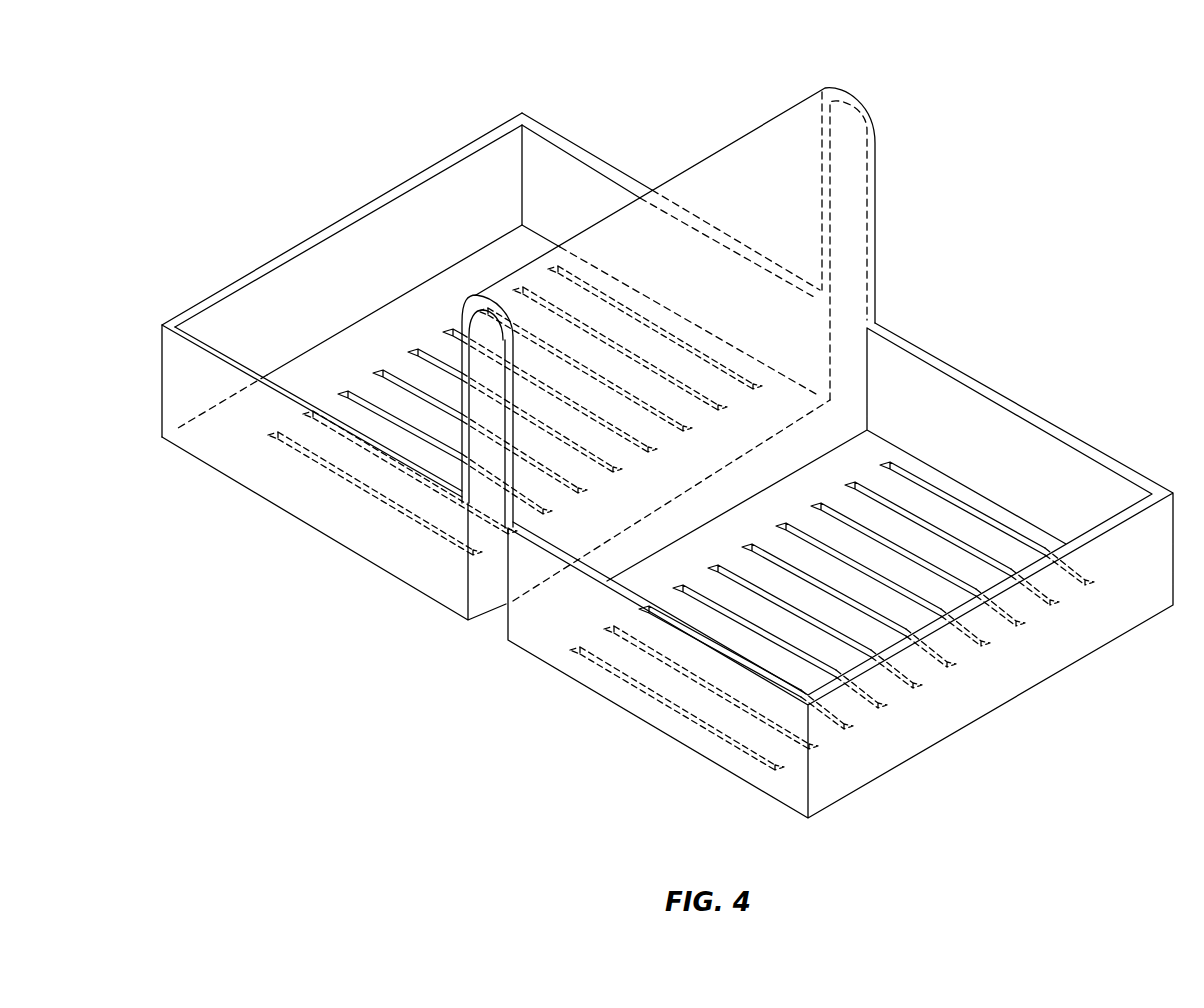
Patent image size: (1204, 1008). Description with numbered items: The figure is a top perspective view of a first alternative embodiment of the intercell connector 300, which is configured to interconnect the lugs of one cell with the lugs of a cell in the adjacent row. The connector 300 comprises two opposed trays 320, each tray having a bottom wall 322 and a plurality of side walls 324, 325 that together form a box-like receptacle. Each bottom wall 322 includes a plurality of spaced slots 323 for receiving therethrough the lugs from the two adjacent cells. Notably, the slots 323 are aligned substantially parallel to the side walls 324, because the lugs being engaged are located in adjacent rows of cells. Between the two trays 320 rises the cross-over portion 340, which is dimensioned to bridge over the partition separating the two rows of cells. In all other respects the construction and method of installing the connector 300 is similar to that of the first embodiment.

The intercell connector 300 is at (1018, 72).
The tray 320 is at (573, 142).
The bottom wall 322 is at (433, 298).
The slots 323 is at (408, 425).
The side wall 324 is at (597, 195).
The side wall 325 is at (330, 277).
The cross-over portion 340 is at (878, 205).